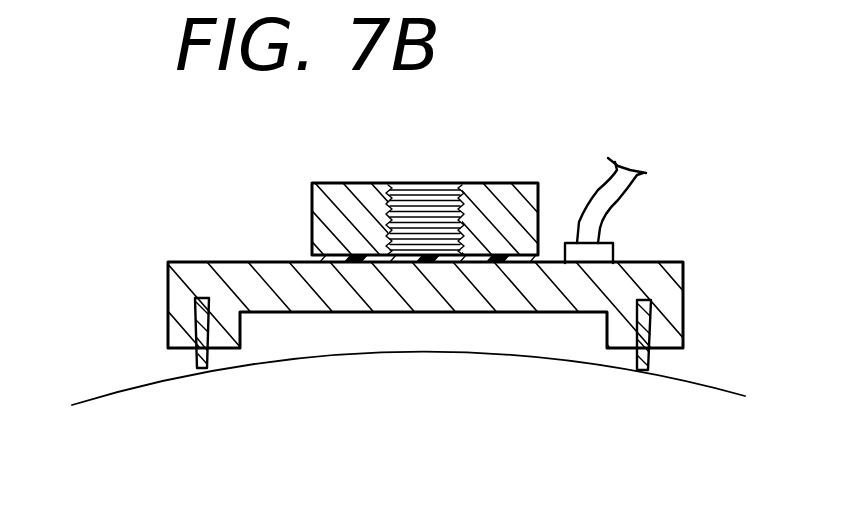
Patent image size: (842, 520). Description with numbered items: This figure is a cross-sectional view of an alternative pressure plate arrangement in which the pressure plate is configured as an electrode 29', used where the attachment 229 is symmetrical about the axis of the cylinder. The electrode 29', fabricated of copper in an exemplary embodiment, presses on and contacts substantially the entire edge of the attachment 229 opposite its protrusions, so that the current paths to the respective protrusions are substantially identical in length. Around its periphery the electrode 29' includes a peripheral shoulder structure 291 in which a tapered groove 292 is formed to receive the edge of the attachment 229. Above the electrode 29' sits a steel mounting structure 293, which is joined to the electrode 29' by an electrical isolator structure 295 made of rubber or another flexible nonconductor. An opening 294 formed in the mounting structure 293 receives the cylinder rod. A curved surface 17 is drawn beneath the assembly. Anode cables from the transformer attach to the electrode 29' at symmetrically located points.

The electrode 29' is at (398, 301).
The mounting structure 293 is at (338, 183).
The opening 294 is at (440, 187).
The electrical isolator structure 295 is at (312, 262).
The peripheral shoulder structure 291 is at (228, 349).
The tapered groove 292 is at (642, 318).
The attachment 229 is at (196, 355).
The curved surface 17 is at (687, 383).